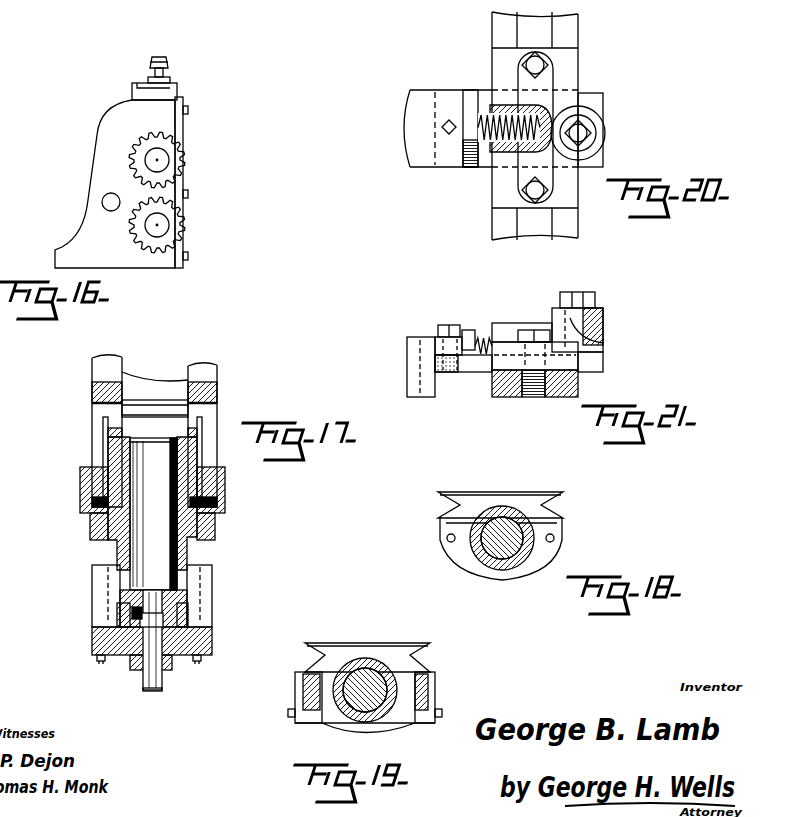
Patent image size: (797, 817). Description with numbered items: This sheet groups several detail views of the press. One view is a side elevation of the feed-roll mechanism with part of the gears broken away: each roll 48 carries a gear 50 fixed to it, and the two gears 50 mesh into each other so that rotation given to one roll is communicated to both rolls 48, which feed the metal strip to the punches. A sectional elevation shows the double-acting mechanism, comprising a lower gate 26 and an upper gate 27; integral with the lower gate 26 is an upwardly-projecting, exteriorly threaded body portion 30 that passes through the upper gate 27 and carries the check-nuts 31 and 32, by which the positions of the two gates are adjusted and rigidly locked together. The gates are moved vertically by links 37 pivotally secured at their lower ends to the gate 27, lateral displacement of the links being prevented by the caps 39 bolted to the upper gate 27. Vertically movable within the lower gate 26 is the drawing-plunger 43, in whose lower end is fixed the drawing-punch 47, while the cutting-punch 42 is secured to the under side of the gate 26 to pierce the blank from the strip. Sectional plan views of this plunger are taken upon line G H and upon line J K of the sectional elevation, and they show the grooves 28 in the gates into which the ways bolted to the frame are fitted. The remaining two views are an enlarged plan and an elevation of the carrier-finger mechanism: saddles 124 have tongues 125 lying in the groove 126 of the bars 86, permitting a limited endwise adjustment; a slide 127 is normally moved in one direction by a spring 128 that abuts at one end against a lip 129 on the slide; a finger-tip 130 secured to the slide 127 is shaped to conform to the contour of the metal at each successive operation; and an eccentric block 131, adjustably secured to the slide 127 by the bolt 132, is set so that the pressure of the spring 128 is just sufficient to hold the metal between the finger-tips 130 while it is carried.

In FIG. 16, the gear 50 is at (165, 139).
In FIG. 16, the roll 48 is at (186, 161).
In FIG. 17, the check-nut 32 is at (108, 455).
In FIG. 17, the link 37 is at (217, 448).
In FIG. 17, the cap 39 is at (80, 496).
In FIG. 17, the upper gate 27 is at (215, 534).
In FIG. 17, the body portion 30 is at (108, 541).
In FIG. 17, the check-nut 31 is at (117, 553).
In FIG. 17, the drawing-plunger 43 is at (137, 573).
In FIG. 17, the lower gate 26 is at (212, 613).
In FIG. 17, the drawing-punch 47 is at (145, 682).
In FIG. 17, the cutting-punch 42 is at (198, 663).
In FIG. 17, the section line J K J is at (78, 467).
In FIG. 17, the section line J K is at (228, 467).
In FIG. 17, the section line G H G is at (108, 560).
In FIG. 17, the section line G H is at (190, 560).
In FIG. 20, the bar 86 is at (579, 38).
In FIG. 20, the saddle 124 is at (580, 70).
In FIG. 20, the groove 126 is at (546, 230).
In FIG. 21, the finger-tip 130 is at (412, 378).
In FIG. 21, the lip 129 is at (467, 333).
In FIG. 21, the spring 128 is at (482, 336).
In FIG. 21, the tongue 125 is at (523, 396).
In FIG. 21, the eccentric block 131 is at (603, 330).
In FIG. 21, the bolt 132 is at (595, 304).
In FIG. 21, the slide 127 is at (603, 367).
In FIG. 19, the groove 28 is at (426, 648).